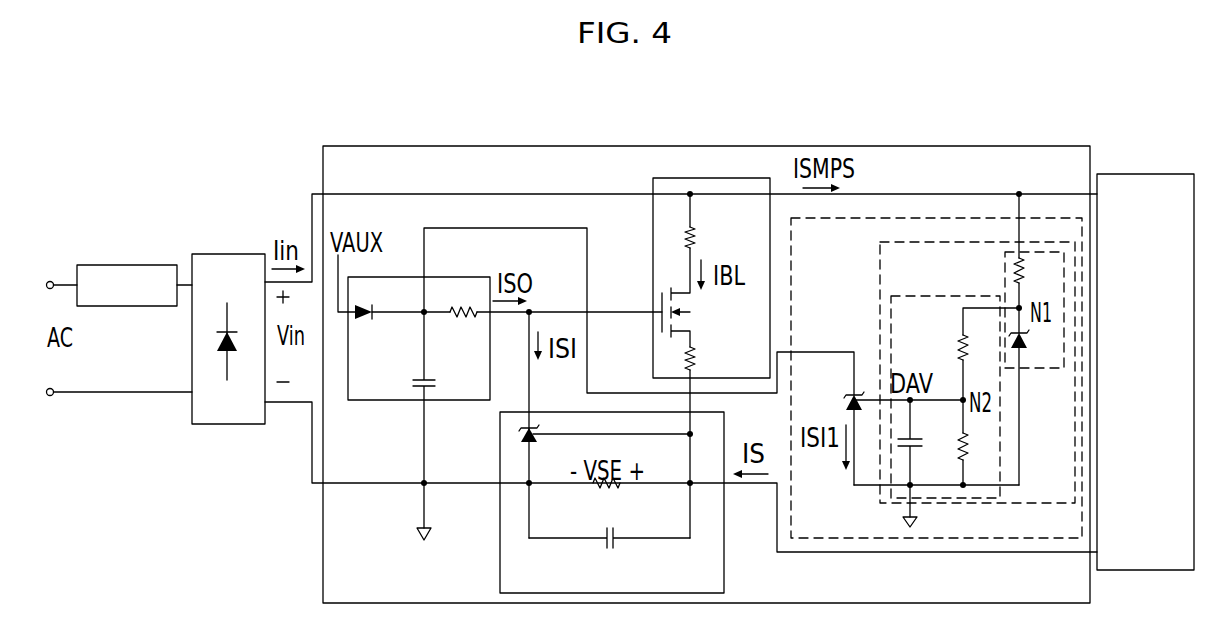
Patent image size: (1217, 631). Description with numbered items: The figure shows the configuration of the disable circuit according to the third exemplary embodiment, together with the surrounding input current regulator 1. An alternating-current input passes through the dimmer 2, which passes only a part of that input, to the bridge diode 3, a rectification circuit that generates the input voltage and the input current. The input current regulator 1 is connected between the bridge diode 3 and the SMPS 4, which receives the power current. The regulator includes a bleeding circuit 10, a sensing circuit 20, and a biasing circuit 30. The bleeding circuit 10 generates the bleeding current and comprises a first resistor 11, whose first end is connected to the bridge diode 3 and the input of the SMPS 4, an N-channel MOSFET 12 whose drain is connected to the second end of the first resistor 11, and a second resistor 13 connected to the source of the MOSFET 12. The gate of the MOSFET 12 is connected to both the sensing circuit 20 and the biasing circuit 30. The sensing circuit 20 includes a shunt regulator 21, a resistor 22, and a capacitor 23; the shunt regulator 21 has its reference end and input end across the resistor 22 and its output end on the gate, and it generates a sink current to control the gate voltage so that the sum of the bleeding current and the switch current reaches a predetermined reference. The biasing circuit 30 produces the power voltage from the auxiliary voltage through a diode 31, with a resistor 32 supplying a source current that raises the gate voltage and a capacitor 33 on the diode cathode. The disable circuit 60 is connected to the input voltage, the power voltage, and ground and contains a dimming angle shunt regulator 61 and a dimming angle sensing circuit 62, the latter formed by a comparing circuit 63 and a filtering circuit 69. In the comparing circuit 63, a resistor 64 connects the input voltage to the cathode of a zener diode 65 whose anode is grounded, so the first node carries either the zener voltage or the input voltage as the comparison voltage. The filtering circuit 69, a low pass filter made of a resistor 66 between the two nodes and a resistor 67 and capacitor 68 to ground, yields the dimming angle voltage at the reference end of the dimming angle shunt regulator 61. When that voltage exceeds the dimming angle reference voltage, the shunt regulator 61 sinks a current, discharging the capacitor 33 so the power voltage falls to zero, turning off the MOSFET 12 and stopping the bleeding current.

The input current regulator 1 is at (614, 146).
The dimmer 2 is at (146, 265).
The bridge diode 3 is at (243, 254).
The SMPS 4 is at (1158, 174).
The bleeding circuit 10 is at (653, 238).
The first resistor 11 is at (705, 240).
The MOSFET 12 is at (693, 297).
The second resistor 13 is at (705, 360).
The sensing circuit 20 is at (500, 530).
The shunt regulator 21 is at (604, 447).
The resistor 22 is at (608, 498).
The capacitor 23 is at (609, 557).
The biasing circuit 30 is at (470, 277).
The diode 31 is at (366, 329).
The resistor 32 is at (465, 327).
The capacitor 33 is at (441, 420).
The disable circuit 60 is at (973, 540).
The dimming angle shunt regulator 61 is at (860, 393).
The dimming angle sensing circuit 62 is at (1046, 242).
The comparing circuit 63 is at (1050, 370).
The resistor 64 is at (1033, 272).
The zener diode 65 is at (1029, 332).
The resistor 66 is at (988, 354).
The resistor 67 is at (975, 442).
The capacitor 68 is at (918, 458).
The filtering circuit 69 is at (913, 296).